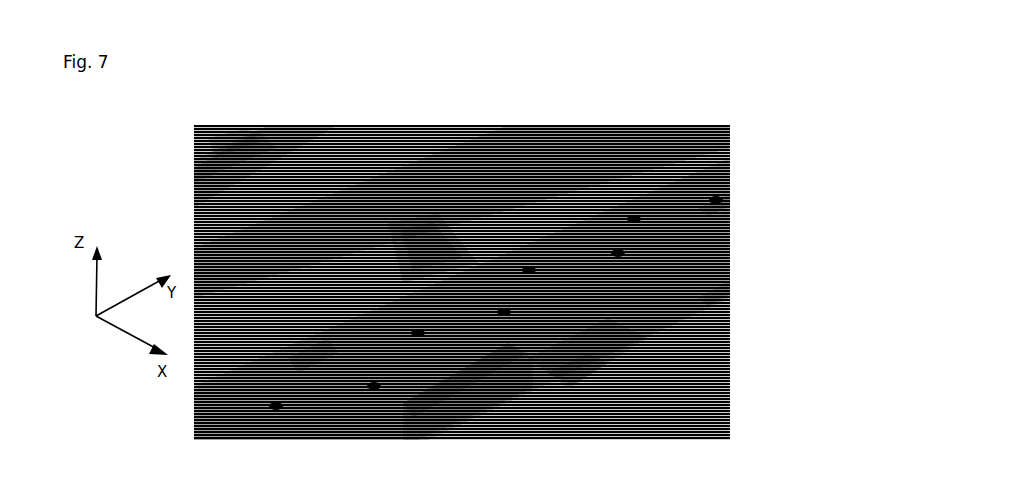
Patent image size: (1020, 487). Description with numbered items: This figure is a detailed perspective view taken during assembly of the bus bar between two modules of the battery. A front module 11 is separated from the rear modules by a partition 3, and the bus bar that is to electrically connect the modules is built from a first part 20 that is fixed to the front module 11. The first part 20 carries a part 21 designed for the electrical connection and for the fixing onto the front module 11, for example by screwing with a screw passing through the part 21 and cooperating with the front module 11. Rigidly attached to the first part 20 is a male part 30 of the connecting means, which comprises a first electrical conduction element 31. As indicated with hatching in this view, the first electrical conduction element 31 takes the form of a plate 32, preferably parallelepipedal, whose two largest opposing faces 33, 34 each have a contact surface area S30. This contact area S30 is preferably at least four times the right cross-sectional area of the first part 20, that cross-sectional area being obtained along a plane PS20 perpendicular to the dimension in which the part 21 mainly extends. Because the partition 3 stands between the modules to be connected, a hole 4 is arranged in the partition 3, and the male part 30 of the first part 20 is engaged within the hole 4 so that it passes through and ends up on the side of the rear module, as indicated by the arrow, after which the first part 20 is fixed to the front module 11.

The front module 11 is at (505, 117).
The part 21 is at (337, 117).
The partition 3 is at (720, 252).
The opposing face 34 is at (712, 192).
The opposing face 33 is at (722, 282).
The contact surface area S30 is at (792, 189).
The plate 32 is at (718, 322).
The first electrical conduction element 31 is at (718, 352).
The male part 30 is at (718, 402).
The hole 4 is at (530, 432).
The first part 20 is at (578, 432).
The plane PS20 is at (300, 345).